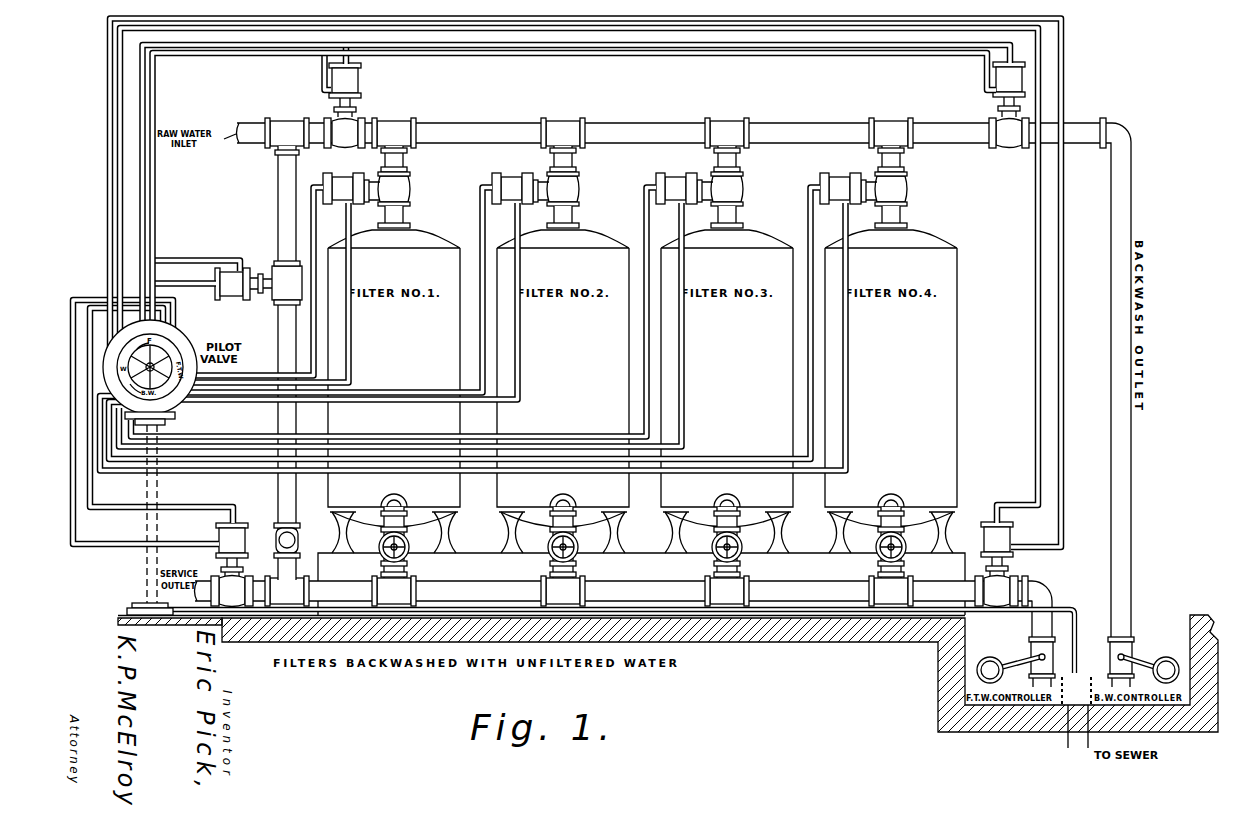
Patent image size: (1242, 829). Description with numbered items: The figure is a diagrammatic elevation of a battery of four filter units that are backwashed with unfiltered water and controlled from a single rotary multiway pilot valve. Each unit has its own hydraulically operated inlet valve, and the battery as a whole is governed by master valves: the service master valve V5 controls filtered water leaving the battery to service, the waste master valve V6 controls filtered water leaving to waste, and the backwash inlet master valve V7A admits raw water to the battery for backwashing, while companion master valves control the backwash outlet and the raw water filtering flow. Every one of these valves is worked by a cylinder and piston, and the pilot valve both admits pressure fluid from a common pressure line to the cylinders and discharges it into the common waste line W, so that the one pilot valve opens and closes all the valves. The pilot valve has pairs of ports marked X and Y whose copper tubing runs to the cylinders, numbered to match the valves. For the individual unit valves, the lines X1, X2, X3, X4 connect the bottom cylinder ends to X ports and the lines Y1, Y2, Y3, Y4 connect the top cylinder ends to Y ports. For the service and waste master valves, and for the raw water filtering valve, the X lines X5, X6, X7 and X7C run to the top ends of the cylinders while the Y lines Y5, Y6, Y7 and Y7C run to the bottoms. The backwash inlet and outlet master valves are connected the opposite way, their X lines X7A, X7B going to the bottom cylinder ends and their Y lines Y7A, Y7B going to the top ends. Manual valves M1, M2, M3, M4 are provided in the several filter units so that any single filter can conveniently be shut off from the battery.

The Y-port connection of valve V1 Y1 is at (316, 227).
The Y-port connection of valve V2 Y2 is at (485, 221).
The Y-port connection of valve V3 Y3 is at (650, 222).
The Y-port connection of valve V4 Y4 is at (814, 220).
The X-port connection of valve V1 X1 is at (353, 343).
The X-port connection of valve V2 X2 is at (521, 366).
The X-port connection of valve V3 X3 is at (685, 404).
The X-port connection of valve V4 X4 is at (850, 387).
The X line for master valve V5 X5 is at (110, 511).
The Y-port connection for master valve V5 Y5 is at (105, 547).
The X line for master valve V6 X6 is at (1034, 459).
The Y-port connection for master valve V6 Y6 is at (1060, 457).
The X line for master valve V7c X7 is at (160, 100).
The Y-port connection for master valve V7c Y7 is at (181, 47).
The X-port connection of backwash inlet master valve V7a X7A is at (191, 257).
The Y-port connection of backwash inlet master valve V7a Y7A is at (190, 291).
The X-port connection of backwash outlet master valve V7b X7B is at (729, 62).
The Y-port connection of backwash outlet master valve V7b Y7B is at (708, 48).
The X-port connection of master valve V7c X7C is at (350, 60).
The Y-port connection of master valve V7c Y7C is at (323, 79).
The service master valve V5 is at (232, 565).
The waste master valve V6 is at (1001, 564).
The backwash inlet master valve V7A is at (258, 283).
The manual valve M1 is at (407, 539).
The manual valve M2 is at (576, 539).
The manual valve M3 is at (740, 539).
The manual valve M4 is at (904, 539).
The waste line W is at (159, 490).